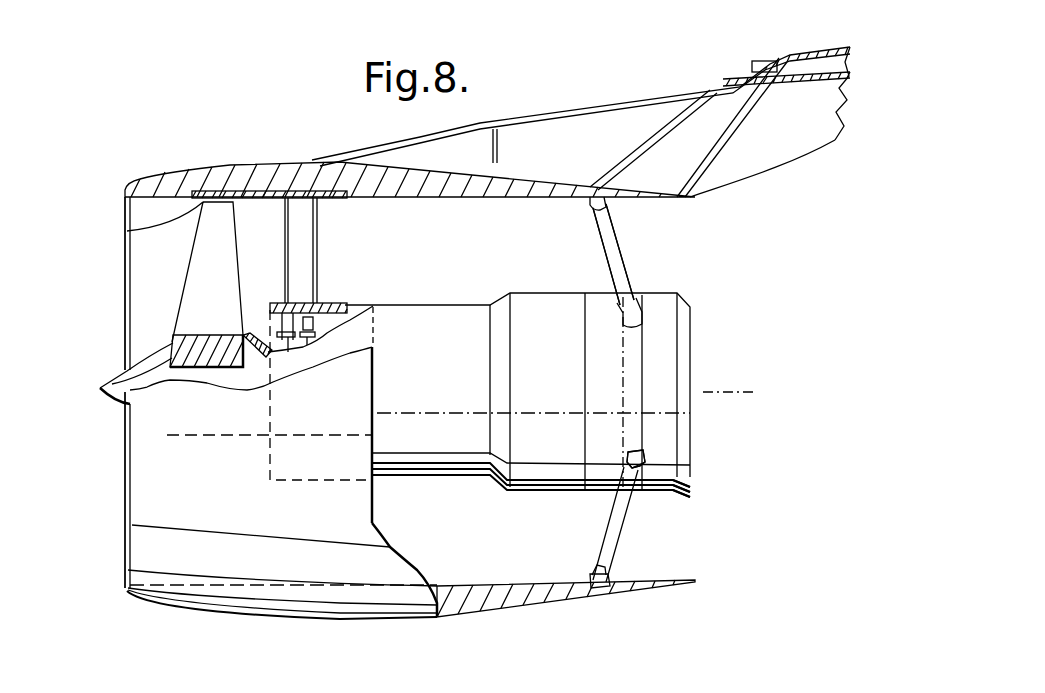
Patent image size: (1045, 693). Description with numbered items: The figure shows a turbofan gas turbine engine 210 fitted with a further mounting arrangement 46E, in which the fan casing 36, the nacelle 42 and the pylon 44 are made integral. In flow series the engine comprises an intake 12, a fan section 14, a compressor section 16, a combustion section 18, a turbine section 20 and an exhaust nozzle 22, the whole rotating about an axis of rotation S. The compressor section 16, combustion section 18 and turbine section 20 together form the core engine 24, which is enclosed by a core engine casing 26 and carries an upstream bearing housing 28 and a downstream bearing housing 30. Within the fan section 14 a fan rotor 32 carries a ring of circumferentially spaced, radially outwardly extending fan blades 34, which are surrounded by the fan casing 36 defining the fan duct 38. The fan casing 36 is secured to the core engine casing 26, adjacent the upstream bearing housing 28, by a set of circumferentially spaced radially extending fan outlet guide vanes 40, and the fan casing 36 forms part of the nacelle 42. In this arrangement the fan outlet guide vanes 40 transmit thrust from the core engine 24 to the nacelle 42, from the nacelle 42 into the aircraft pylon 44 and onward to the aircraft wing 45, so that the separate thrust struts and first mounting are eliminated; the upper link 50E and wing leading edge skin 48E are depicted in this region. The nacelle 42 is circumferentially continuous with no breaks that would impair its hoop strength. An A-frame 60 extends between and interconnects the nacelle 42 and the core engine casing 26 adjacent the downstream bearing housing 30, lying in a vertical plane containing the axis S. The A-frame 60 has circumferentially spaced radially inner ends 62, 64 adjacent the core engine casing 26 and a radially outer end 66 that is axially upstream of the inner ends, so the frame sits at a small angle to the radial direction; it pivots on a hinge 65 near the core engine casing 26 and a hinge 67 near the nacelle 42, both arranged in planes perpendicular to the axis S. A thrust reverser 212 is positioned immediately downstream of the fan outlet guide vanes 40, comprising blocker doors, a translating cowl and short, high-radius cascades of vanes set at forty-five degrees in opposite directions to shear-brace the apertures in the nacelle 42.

The intake 12 is at (137, 311).
The fan section 14 is at (227, 567).
The compressor section 16 is at (432, 440).
The combustion section 18 is at (530, 450).
The turbine section 20 is at (597, 457).
The exhaust nozzle 22 is at (684, 470).
The core engine 24 is at (549, 276).
The core engine casing 26 is at (360, 307).
The upstream bearing housing 28 is at (268, 307).
The downstream bearing housing 30 is at (636, 342).
The fan rotor 32 is at (218, 356).
The fan blades 34 is at (203, 253).
The fan casing 36 is at (157, 228).
The fan duct 38 is at (278, 247).
The fan outlet guide vanes 40 is at (305, 237).
The nacelle 42 is at (222, 178).
The pylon 44 is at (700, 145).
The aircraft wing 45 is at (770, 47).
The mounting arrangement 46E is at (680, 232).
The wing leading edge skin 48E is at (312, 146).
The upper link 50E is at (640, 261).
The A-frame 60 is at (613, 535).
The radially inner end 62 is at (636, 459).
The radially inner end 64 is at (647, 463).
The hinge 65 is at (647, 468).
The radially outer end 66 is at (600, 583).
The hinge 67 is at (593, 570).
The turbofan gas turbine engine 210 is at (110, 532).
The thrust reverser 212 is at (330, 602).
The axis of rotation S is at (735, 392).